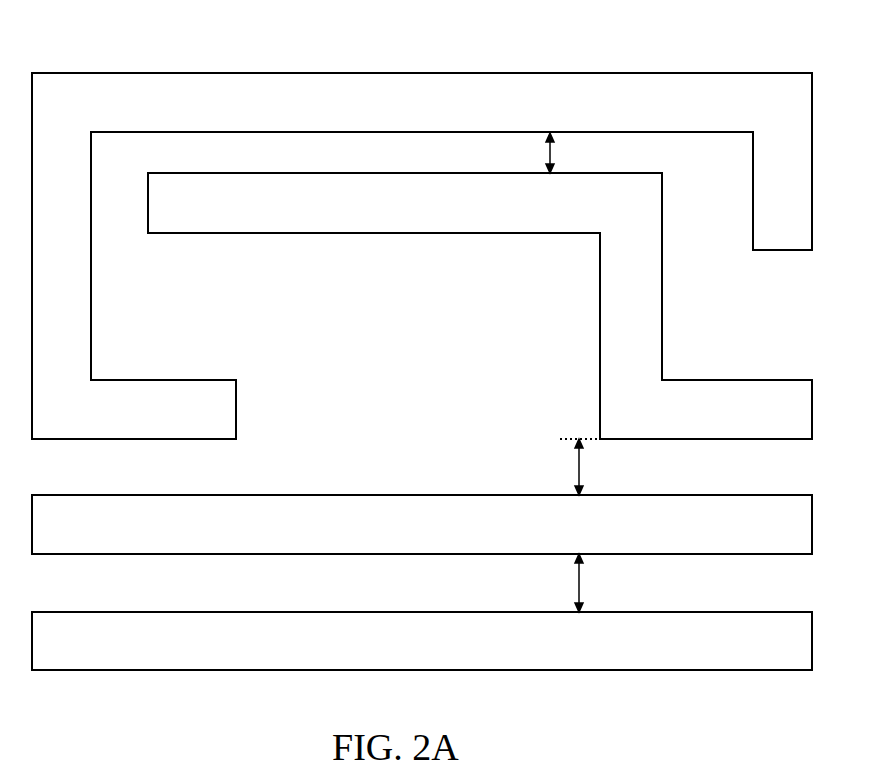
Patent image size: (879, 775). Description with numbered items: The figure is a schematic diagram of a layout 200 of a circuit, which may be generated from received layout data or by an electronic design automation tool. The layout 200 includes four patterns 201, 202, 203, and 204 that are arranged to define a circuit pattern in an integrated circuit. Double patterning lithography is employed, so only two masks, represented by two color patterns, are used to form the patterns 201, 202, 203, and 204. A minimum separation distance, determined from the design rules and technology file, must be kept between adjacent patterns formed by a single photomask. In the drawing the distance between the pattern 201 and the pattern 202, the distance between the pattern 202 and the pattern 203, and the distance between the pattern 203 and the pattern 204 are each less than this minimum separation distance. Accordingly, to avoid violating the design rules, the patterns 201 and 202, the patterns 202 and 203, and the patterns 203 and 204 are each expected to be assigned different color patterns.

The layout 200 is at (422, 340).
The pattern 201 is at (422, 256).
The pattern 202 is at (480, 306).
The pattern 203 is at (422, 524).
The pattern 204 is at (422, 641).